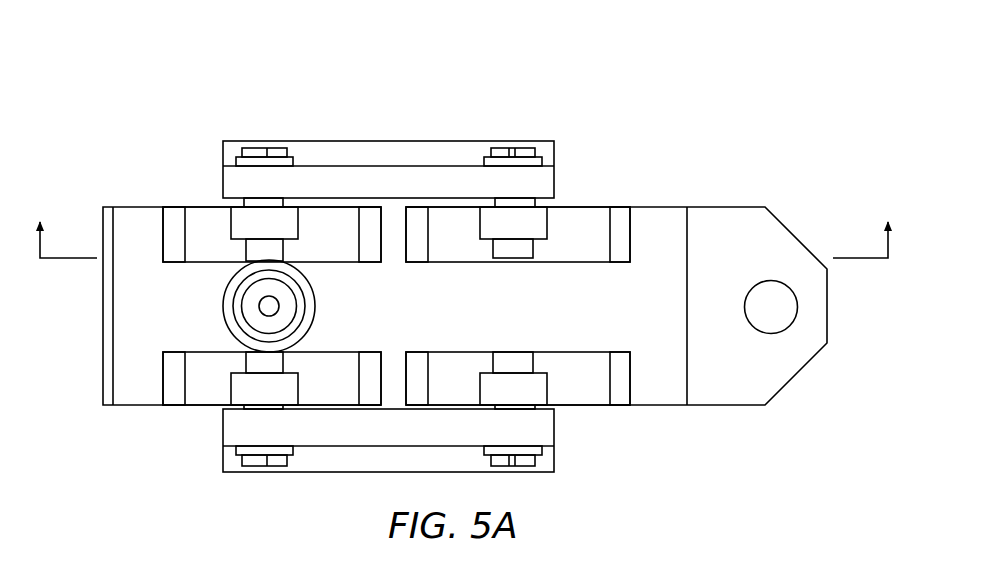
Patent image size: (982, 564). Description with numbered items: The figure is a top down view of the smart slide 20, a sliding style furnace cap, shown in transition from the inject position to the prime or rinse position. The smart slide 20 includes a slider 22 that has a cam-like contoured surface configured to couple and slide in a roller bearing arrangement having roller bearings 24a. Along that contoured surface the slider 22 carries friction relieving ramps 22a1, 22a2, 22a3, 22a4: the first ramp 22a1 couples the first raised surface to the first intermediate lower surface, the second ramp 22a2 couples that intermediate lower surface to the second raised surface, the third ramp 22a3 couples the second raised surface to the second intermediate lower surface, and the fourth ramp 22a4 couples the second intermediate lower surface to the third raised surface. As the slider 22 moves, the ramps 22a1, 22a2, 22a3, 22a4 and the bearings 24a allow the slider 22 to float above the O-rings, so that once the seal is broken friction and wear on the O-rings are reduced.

The smart slide 20 is at (113, 70).
The slider 22 is at (660, 287).
The first ramp 22a1 is at (619, 215).
The second ramp 22a2 is at (413, 212).
The third ramp 22a3 is at (372, 212).
The fourth ramp 22a4 is at (177, 215).
The roller bearings 24a is at (515, 220).